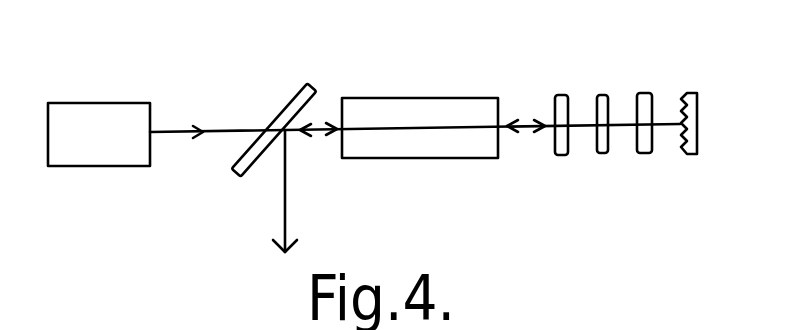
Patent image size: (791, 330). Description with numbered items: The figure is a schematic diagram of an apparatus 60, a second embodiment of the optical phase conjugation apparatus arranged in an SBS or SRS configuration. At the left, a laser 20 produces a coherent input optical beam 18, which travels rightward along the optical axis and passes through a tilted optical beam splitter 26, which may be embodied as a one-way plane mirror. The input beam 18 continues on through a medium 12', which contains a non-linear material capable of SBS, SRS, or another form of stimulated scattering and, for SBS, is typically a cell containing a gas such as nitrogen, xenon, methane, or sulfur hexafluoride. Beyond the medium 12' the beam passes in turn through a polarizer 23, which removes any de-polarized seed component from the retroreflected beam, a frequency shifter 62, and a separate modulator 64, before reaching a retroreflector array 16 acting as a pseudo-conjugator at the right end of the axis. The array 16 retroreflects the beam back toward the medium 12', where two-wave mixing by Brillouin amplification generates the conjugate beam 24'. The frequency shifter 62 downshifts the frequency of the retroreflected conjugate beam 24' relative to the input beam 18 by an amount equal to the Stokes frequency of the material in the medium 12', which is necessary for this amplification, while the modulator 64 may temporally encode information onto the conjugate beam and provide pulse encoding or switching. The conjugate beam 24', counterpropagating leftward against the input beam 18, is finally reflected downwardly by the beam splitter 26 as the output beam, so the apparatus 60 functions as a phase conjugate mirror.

The laser 20 is at (92, 102).
The input optical beam 18 is at (173, 128).
The apparatus 60 is at (247, 83).
The optical beam splitter 26 is at (305, 85).
The retroreflected conjugate beam 24' is at (232, 191).
The medium 12' is at (420, 91).
The polarizer 23 is at (562, 92).
The frequency shifter 62 is at (603, 155).
The modulator 64 is at (642, 92).
The retroreflector array 16 is at (687, 156).